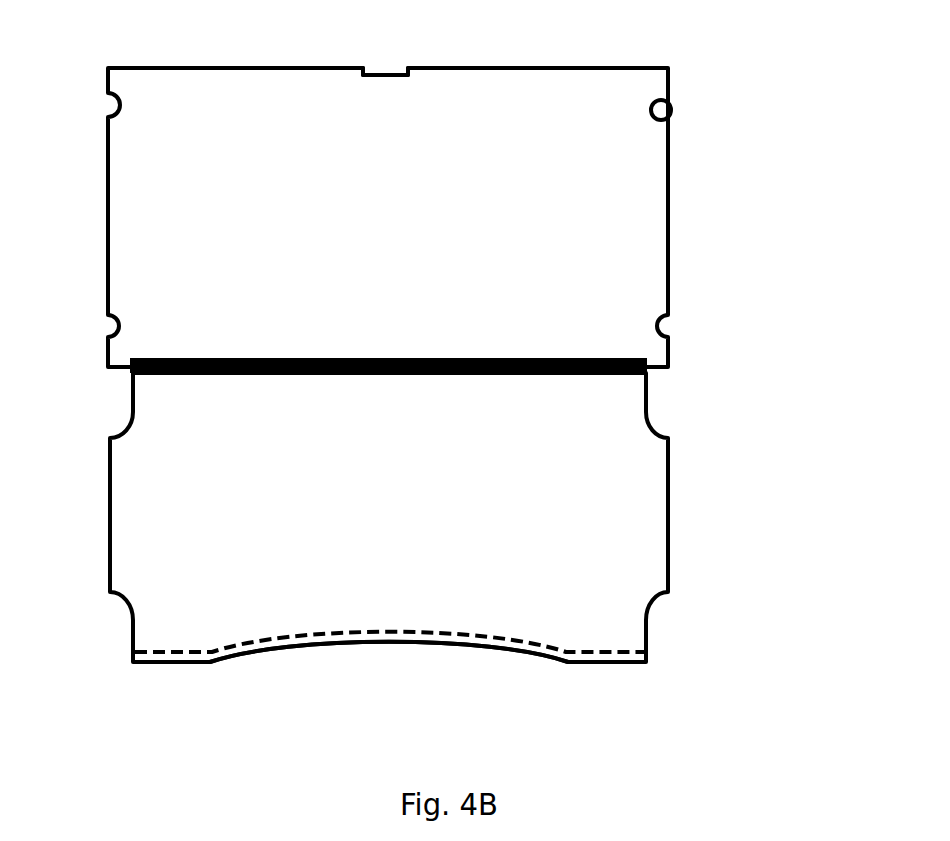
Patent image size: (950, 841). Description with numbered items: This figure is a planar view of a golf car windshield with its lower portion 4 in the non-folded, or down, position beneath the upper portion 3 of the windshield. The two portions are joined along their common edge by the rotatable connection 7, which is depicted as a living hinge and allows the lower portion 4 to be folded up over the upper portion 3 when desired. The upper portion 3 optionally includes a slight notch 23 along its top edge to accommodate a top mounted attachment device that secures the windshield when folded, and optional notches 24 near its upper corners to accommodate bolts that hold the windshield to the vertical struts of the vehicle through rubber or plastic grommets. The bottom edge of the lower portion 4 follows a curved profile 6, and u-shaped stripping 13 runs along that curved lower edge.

The upper portion of the windshield 3 is at (268, 177).
The lower portion of the windshield 4 is at (537, 465).
The curved profile along the lower portion of the windshield 6 is at (305, 645).
The rotatable connection 7 is at (148, 376).
The u-shaped stripping 13 is at (493, 642).
The notch in upper windshield for clamp 23 is at (385, 73).
The notch in upper windshield for bolt attachment 24 is at (666, 104).